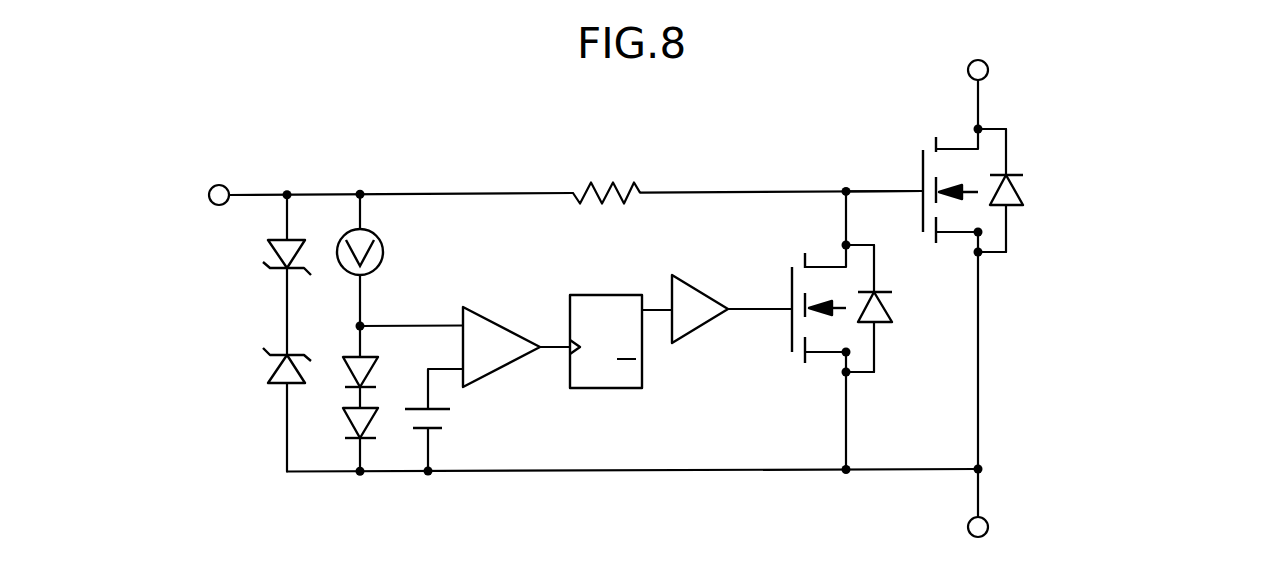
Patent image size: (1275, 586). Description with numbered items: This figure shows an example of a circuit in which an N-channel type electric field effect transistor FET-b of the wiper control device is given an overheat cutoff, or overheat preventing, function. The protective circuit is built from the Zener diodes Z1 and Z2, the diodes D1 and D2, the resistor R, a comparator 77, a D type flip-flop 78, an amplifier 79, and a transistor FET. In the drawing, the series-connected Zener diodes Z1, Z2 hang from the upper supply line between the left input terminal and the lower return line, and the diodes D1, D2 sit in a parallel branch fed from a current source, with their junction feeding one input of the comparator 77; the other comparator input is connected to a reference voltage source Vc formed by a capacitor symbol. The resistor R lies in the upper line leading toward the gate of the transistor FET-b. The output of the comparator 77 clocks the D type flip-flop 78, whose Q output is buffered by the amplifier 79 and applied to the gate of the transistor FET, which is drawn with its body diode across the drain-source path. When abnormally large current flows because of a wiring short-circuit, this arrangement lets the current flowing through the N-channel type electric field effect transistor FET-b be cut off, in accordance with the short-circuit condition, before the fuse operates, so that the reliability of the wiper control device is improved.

The Zener diode Z1 is at (270, 242).
The Zener diode Z2 is at (271, 363).
The diode D1 is at (372, 355).
The diode D2 is at (370, 443).
The reference voltage source Vc is at (445, 419).
The resistor R is at (606, 176).
The comparator 77 is at (487, 316).
The D type flip-flop 78 is at (605, 295).
The amplifier 79 is at (705, 284).
The transistor FET is at (889, 333).
The N-channel type electric field effect transistor FET-b is at (1016, 168).